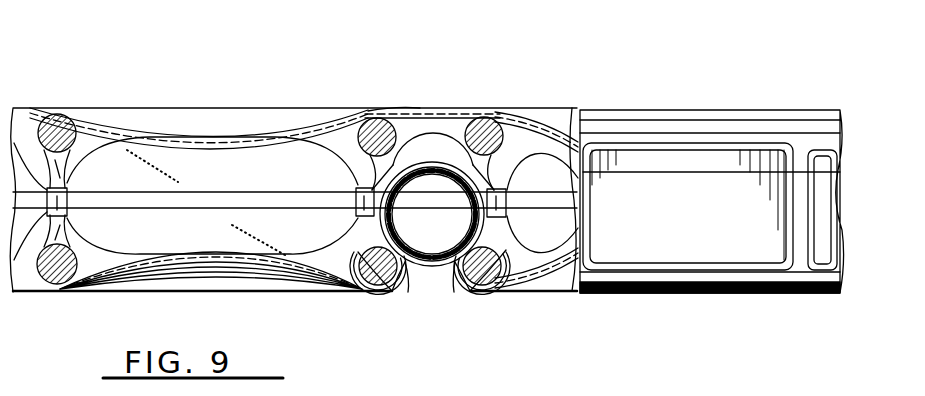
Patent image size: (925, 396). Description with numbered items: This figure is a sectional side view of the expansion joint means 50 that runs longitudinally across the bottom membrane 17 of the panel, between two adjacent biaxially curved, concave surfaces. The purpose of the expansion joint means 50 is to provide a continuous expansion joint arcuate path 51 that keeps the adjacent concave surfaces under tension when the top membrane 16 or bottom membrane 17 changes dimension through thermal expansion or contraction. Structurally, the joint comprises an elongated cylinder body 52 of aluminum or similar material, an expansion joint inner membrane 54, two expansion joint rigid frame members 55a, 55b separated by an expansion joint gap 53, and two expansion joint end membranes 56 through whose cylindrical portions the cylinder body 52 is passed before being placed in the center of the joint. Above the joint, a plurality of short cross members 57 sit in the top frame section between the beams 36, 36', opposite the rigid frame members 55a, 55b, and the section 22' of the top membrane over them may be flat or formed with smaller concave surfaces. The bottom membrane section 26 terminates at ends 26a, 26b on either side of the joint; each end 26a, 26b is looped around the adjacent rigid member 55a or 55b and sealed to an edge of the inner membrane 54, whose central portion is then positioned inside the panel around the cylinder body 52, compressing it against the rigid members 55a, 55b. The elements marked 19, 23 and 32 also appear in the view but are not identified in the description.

The top membrane 16 is at (180, 94).
The bottom membrane 17 is at (178, 296).
The end member 19 is at (822, 233).
The section of top membrane 22' is at (432, 169).
The upper wall 23 is at (110, 106).
The bottom membrane section 26 is at (136, 291).
The end of bottom membrane section 26a is at (356, 230).
The end of bottom membrane section 26b is at (500, 246).
The shaft 32 is at (243, 187).
The beam 36 is at (217, 180).
The beam 36' is at (517, 180).
The expansion joint means 50 is at (418, 84).
The expansion joint arcuate path 51 is at (455, 110).
The elongated cylinder body 52 is at (400, 224).
The expansion joint gap 53 is at (437, 300).
The expansion joint inner membrane 54 is at (372, 171).
The expansion joint rigid frame member 55a is at (392, 295).
The expansion joint rigid frame member 55b is at (472, 298).
The expansion joint end membrane 56 is at (312, 293).
The short cross member 57 is at (401, 112).